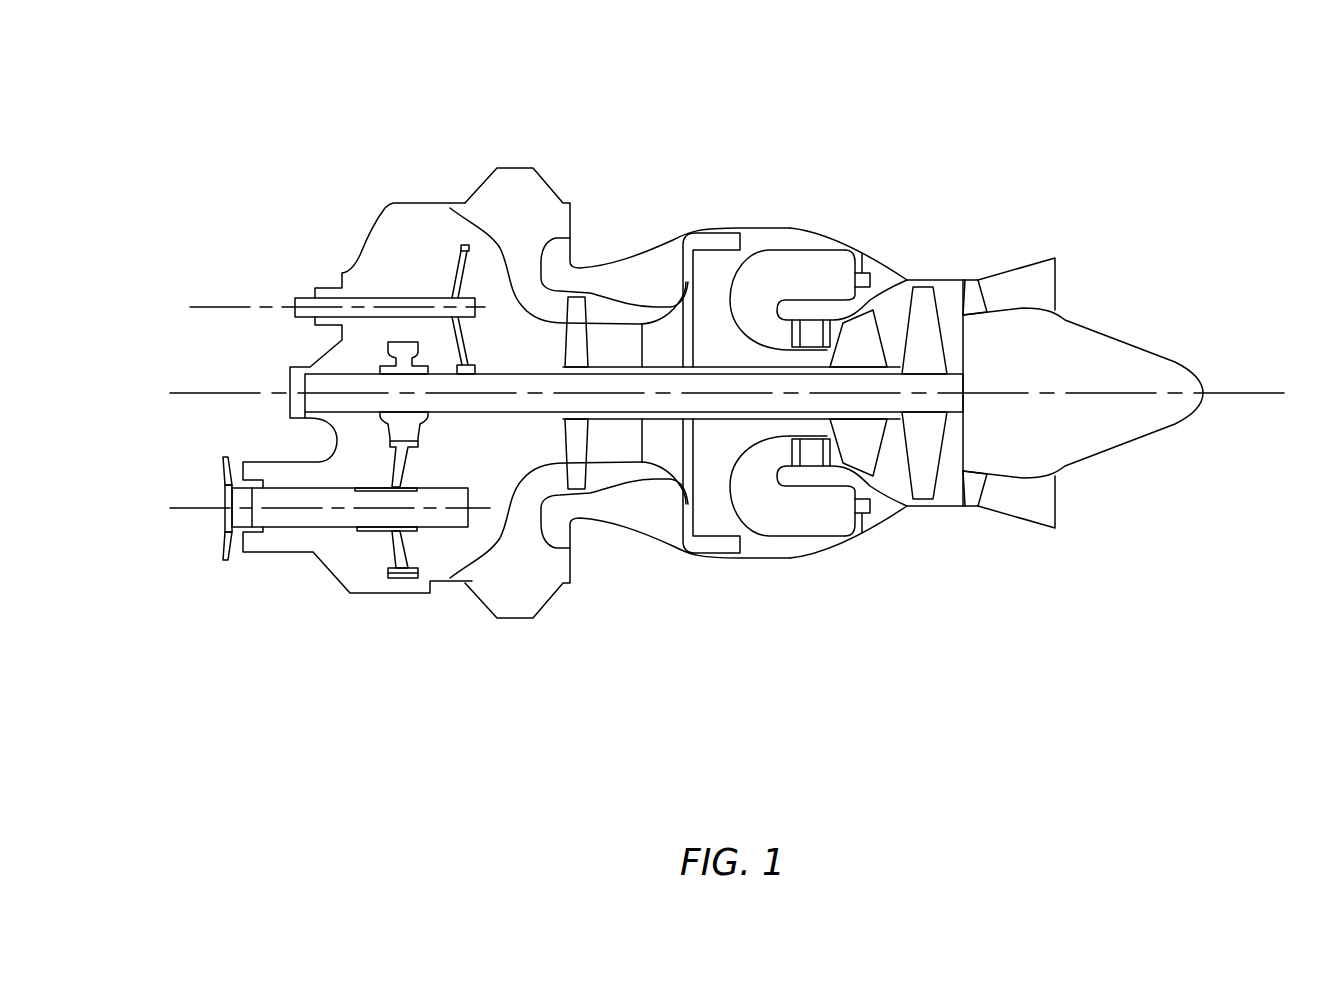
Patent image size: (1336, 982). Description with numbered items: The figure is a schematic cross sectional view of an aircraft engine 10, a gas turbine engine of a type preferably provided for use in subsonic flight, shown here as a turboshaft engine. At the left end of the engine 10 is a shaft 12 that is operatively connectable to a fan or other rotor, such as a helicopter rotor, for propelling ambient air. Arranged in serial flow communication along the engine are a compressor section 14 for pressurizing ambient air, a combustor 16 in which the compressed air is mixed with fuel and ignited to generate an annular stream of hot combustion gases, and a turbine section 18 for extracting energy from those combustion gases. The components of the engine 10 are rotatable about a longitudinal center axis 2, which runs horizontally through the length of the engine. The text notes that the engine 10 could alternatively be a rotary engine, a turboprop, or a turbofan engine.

The aircraft engine 10 is at (232, 73).
The longitudinal center axis 2 is at (1268, 393).
The shaft 12 is at (287, 517).
The compressor section 14 is at (625, 222).
The combustor 16 is at (810, 222).
The turbine section 18 is at (929, 259).